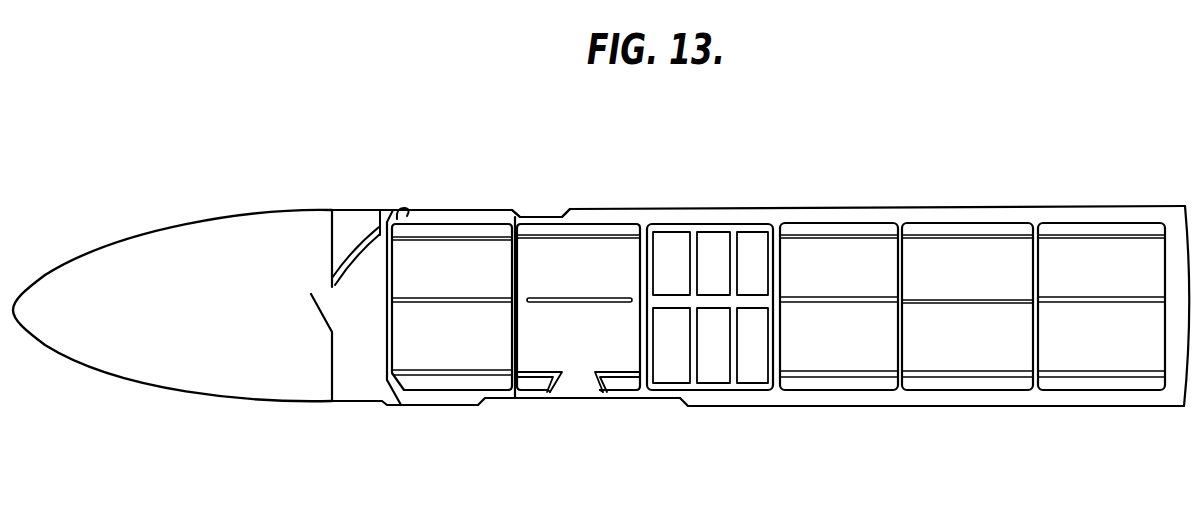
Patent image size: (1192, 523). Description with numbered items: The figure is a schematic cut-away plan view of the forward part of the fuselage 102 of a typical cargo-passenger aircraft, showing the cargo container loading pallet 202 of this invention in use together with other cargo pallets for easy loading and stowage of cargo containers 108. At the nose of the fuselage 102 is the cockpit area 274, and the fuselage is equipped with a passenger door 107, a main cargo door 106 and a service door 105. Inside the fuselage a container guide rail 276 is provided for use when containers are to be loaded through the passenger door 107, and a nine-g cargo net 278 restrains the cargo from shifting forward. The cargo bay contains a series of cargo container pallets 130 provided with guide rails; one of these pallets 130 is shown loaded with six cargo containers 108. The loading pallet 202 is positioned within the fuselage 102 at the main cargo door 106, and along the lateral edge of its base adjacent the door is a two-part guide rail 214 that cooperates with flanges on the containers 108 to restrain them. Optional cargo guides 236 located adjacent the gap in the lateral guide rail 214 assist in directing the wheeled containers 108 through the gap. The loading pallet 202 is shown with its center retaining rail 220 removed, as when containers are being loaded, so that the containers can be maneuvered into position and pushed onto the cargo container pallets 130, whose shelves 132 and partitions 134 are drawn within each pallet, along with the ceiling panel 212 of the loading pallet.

The fuselage 102 is at (927, 407).
The service door 105 is at (540, 217).
The main cargo door 106 is at (518, 400).
The passenger door 107 is at (352, 401).
The cargo containers 108 is at (747, 232).
The cargo container pallets 130 is at (467, 224).
The container shelves 132 is at (413, 243).
The container partition 134 is at (488, 303).
The cargo container loading pallet 202 is at (627, 390).
The ceiling panel 212 is at (532, 240).
The two-part guide rail 214 is at (607, 370).
The center retaining rail 220 is at (600, 297).
The cargo guides 236 is at (563, 388).
The cockpit area 274 is at (172, 317).
The container guide rail 276 is at (363, 239).
The 9-g cargo net 278 is at (397, 213).